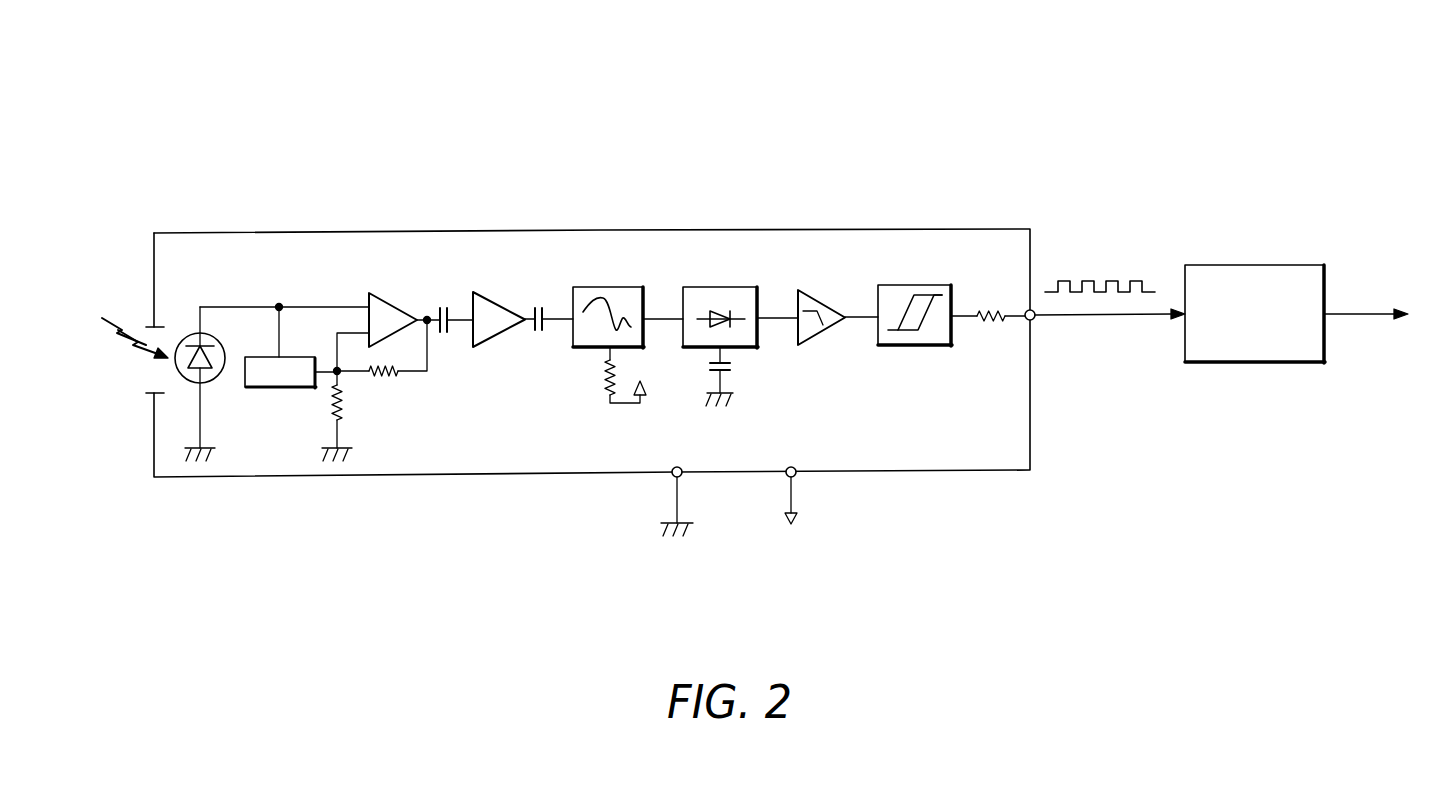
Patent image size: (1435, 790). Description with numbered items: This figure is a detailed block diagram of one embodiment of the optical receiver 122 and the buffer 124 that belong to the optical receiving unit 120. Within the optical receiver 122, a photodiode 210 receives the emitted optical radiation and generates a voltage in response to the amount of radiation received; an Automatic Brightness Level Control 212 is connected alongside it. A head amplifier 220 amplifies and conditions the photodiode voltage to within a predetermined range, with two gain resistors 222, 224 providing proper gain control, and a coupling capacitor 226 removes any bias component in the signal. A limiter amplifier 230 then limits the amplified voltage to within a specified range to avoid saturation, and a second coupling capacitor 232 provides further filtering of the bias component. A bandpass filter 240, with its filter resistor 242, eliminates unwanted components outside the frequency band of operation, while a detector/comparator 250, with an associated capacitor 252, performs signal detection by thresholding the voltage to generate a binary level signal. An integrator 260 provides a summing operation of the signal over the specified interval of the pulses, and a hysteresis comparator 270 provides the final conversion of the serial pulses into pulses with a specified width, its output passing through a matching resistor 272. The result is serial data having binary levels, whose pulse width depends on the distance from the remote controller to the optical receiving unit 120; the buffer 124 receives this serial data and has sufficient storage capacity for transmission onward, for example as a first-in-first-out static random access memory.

The optical receiving unit 120 is at (755, 306).
The optical receiver 122 is at (568, 376).
The buffer 124 is at (1255, 297).
The photodiode 210 is at (196, 363).
The Automatic Brightness Level Control (ABLC) 212 is at (271, 398).
The head amplifier 220 is at (386, 301).
The gain resistor 222 is at (368, 416).
The gain resistor 224 is at (397, 366).
The coupling capacitor 226 is at (440, 294).
The limiter amplifier 230 is at (504, 298).
The coupling capacitor 232 is at (540, 348).
The bandpass filter (BPF) 240 is at (628, 298).
The filter resistor 242 is at (596, 382).
The detector/comparator 250 is at (740, 298).
The capacitor 252 is at (751, 376).
The integrator 260 is at (835, 294).
The hysteresis comparator 270 is at (927, 295).
The matching resistor 272 is at (999, 292).